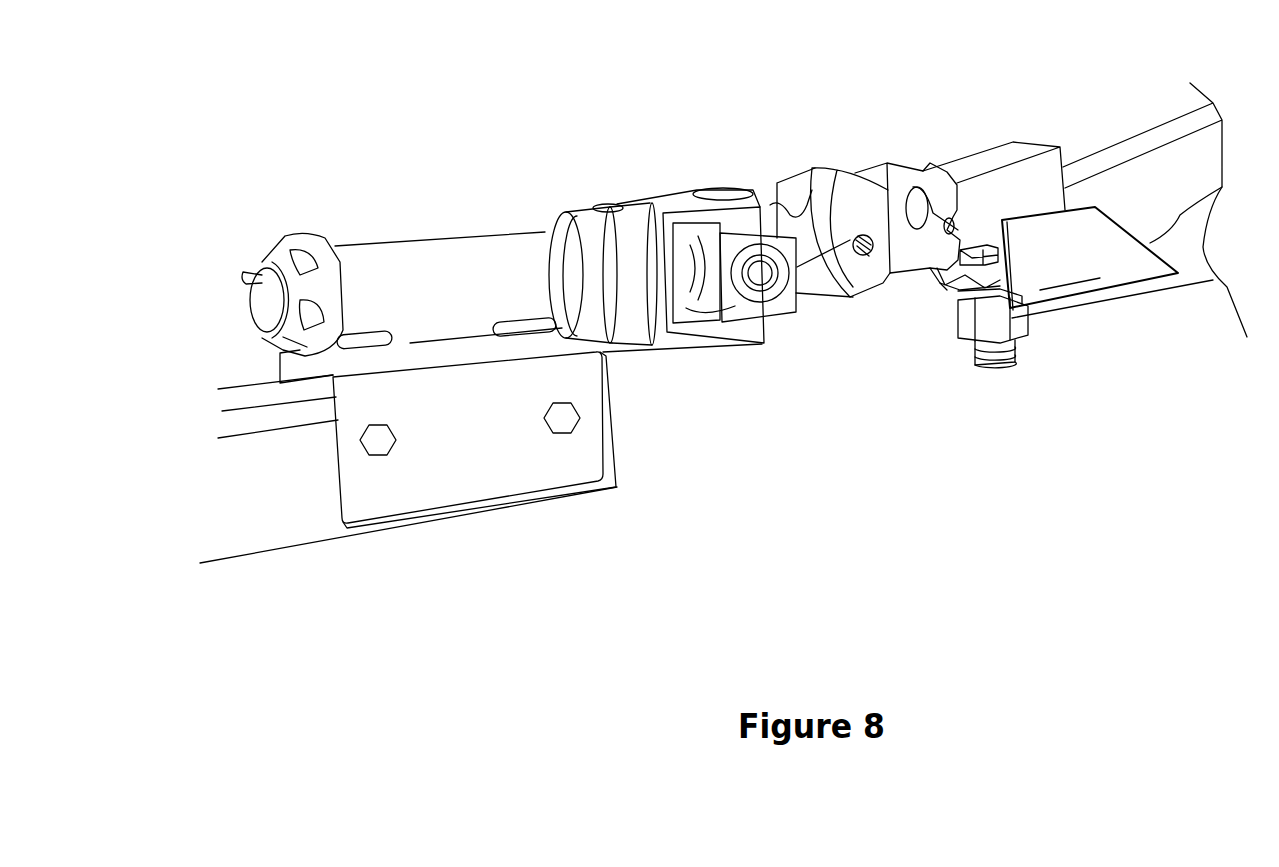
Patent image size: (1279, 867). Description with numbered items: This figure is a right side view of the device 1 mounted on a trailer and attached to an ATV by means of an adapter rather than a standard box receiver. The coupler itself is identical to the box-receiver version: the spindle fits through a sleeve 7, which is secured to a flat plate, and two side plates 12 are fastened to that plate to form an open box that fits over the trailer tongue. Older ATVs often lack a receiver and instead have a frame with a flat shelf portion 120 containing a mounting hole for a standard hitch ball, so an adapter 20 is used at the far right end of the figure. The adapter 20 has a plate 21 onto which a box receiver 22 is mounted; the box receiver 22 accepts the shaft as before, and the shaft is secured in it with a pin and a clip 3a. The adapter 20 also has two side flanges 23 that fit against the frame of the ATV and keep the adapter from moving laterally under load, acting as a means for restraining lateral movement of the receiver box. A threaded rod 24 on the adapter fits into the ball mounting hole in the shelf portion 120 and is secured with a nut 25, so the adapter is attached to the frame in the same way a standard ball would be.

The device 1 is at (648, 182).
The sleeve 7 is at (478, 240).
The side plates 12 is at (487, 455).
The clip 3a is at (912, 192).
The box receiver 22 is at (998, 140).
The adapter 20 is at (1076, 262).
The side flanges 23 is at (1050, 283).
The flat shelf portion 120 is at (1128, 143).
The plate 21 is at (937, 278).
The nut 25 is at (957, 330).
The threaded rod 24 is at (985, 362).